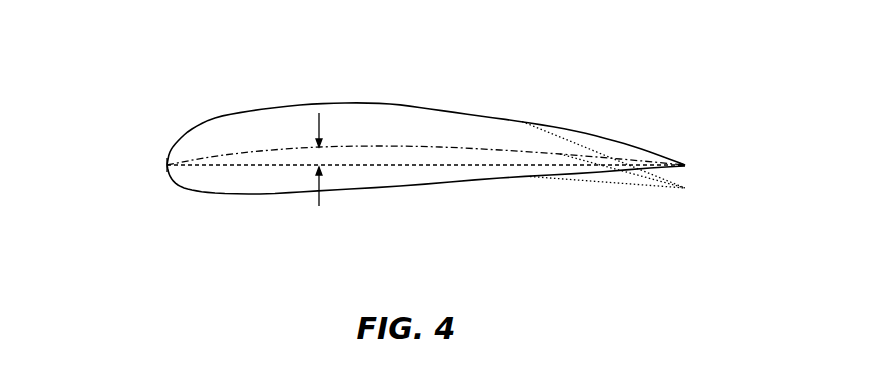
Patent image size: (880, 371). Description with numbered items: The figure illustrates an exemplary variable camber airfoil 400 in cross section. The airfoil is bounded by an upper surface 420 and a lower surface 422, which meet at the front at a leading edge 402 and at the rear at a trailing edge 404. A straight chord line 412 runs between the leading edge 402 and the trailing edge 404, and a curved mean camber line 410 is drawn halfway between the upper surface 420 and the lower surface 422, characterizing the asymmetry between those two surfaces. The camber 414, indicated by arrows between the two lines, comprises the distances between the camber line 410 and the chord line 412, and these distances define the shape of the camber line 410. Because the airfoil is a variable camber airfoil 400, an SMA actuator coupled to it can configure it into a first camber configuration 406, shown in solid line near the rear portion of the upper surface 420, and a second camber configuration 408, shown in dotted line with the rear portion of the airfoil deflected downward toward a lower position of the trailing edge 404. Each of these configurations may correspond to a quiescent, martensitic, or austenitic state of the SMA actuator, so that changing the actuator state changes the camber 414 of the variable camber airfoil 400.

The variable camber airfoil 400 is at (555, 30).
The leading edge 402 is at (164, 162).
The trailing edge 404 is at (688, 165).
The first camber configuration 406 is at (613, 139).
The second camber configuration 408 is at (686, 189).
The mean camber line 410 is at (428, 147).
The chord line 412 is at (686, 296).
The camber 414 is at (320, 168).
The upper surface 420 is at (256, 112).
The lower surface 422 is at (228, 194).